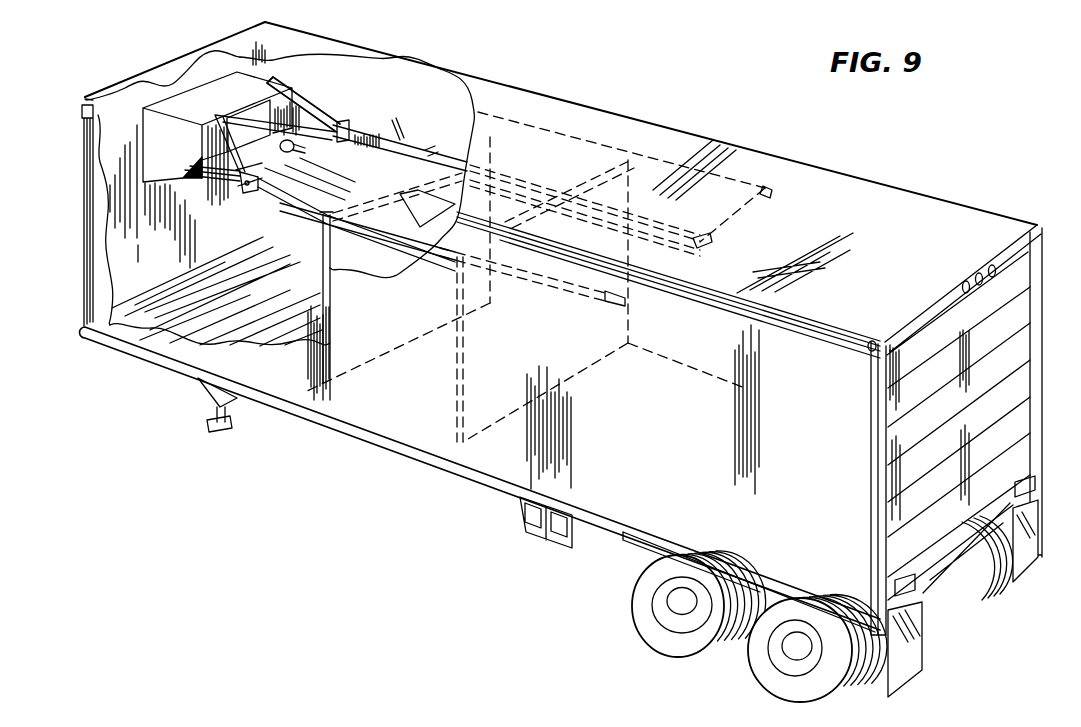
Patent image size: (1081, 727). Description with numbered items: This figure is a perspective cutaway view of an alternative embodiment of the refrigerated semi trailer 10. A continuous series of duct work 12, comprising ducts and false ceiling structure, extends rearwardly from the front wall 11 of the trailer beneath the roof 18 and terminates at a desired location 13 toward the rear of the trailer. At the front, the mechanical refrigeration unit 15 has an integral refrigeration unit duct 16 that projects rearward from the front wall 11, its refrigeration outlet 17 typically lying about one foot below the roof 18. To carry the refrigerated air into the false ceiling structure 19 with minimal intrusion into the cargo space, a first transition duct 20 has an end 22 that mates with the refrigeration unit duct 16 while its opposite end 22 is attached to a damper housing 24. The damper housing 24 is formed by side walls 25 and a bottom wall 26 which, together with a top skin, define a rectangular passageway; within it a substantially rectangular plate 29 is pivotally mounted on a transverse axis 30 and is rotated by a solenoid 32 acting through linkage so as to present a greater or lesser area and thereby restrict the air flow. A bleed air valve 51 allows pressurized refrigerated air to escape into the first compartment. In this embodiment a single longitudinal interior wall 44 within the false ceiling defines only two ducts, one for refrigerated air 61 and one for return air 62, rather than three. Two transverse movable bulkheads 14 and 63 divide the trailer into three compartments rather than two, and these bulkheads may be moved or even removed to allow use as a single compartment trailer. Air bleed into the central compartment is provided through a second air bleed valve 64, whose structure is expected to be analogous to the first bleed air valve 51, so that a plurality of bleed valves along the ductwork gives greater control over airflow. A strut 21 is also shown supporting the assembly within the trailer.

The semi trailer 10 is at (362, 436).
The front wall 11 is at (128, 80).
The duct work 12 is at (407, 105).
The termination location 13 is at (767, 193).
The movable bulkhead 14 is at (289, 406).
The mechanical refrigeration unit 15 is at (183, 62).
The refrigeration unit duct 16 is at (180, 97).
The refrigeration outlet 17 is at (247, 115).
The roof 18 is at (490, 80).
The false ceiling structure 19 is at (395, 125).
The first transition duct 20 is at (280, 95).
The strut 21 is at (213, 170).
The transition duct end 22 is at (300, 98).
The damper housing 24 is at (250, 200).
The side walls 25 is at (343, 122).
The bottom wall 26 is at (357, 132).
The rectangular plate 29 is at (290, 208).
The transverse axis 30 is at (242, 188).
The solenoid 32 is at (292, 138).
The longitudinal interior wall 44 is at (427, 153).
The bleed air valve 51 is at (275, 195).
The refrigerated air duct 61 is at (340, 192).
The return air duct 62 is at (573, 153).
The second movable bulkhead 63 is at (457, 435).
The second air bleed valve 64 is at (408, 214).